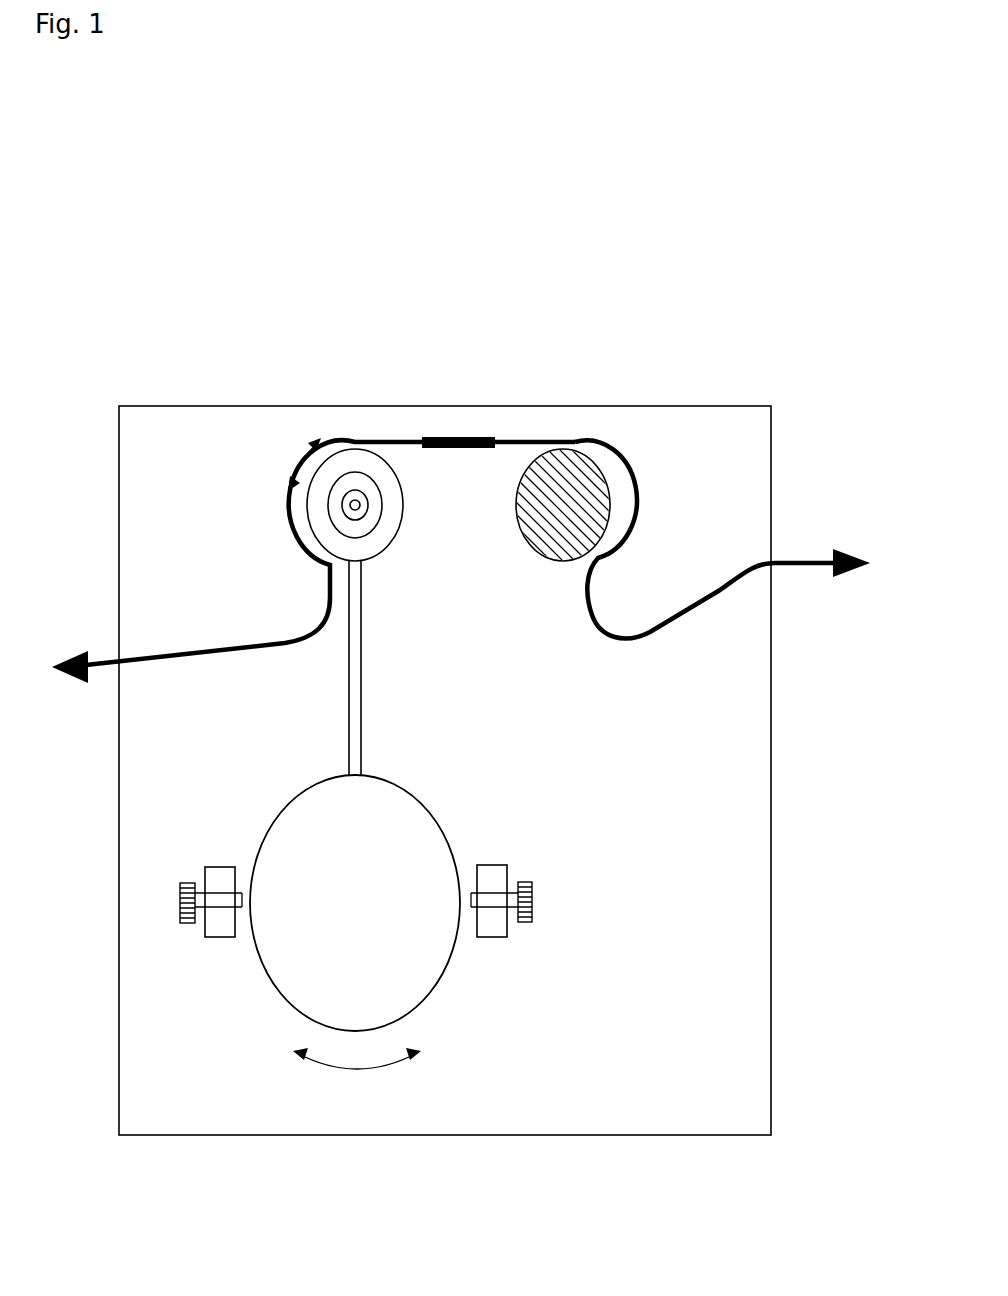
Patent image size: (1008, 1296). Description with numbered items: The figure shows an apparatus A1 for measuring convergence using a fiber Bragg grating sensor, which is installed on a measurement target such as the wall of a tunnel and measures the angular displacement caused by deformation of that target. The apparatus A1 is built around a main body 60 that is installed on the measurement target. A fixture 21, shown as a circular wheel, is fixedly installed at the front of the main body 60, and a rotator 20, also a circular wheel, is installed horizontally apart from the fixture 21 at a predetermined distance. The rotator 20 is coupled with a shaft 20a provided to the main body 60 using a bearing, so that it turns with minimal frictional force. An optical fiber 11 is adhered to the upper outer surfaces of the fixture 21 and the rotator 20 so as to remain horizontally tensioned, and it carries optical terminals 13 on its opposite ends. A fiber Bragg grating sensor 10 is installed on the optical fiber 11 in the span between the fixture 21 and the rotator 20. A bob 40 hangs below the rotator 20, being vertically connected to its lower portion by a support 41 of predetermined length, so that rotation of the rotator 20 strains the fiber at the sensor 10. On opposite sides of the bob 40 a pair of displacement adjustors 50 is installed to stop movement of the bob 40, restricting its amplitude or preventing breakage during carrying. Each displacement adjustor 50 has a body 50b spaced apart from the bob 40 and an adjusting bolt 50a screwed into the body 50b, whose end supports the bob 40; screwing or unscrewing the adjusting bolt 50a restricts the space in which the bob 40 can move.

The apparatus for measuring convergence A1 is at (642, 276).
The fiber Bragg grating sensor 10 is at (455, 437).
The optical fiber 11 is at (600, 632).
The optical terminals 13 is at (855, 585).
The rotator 20 is at (377, 465).
The shaft 20a is at (362, 513).
The fixture 21 is at (548, 542).
The bob 40 is at (395, 840).
The support 41 is at (350, 712).
The displacement adjustor 50 is at (406, 967).
The adjusting bolt 50a is at (406, 902).
The body 50b is at (497, 937).
The main body 60 is at (771, 820).